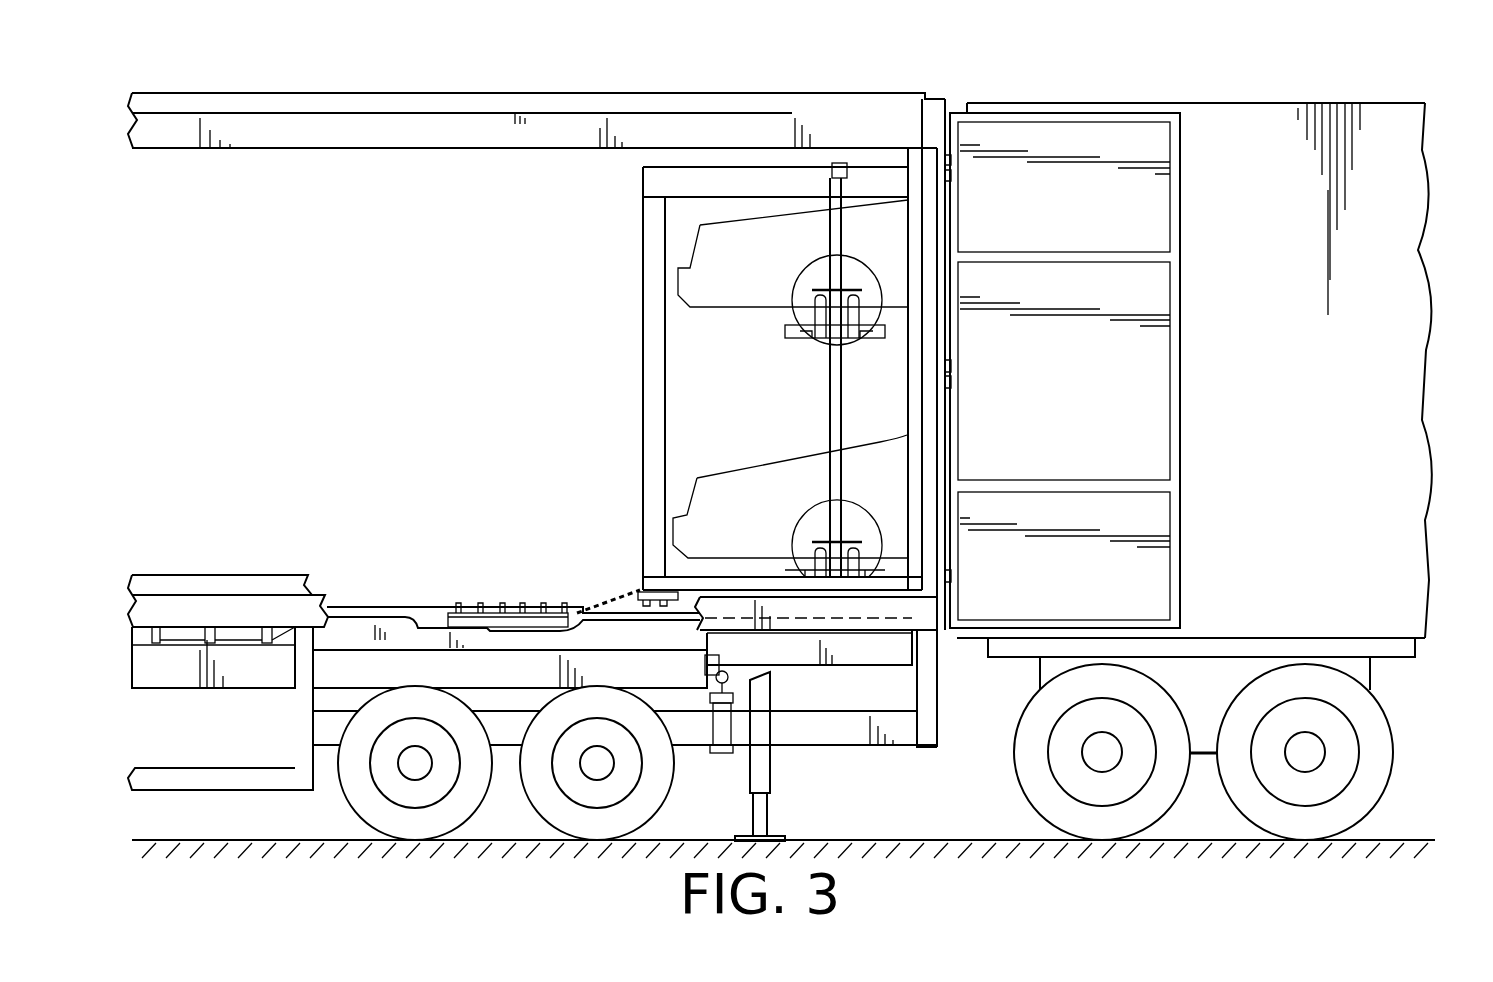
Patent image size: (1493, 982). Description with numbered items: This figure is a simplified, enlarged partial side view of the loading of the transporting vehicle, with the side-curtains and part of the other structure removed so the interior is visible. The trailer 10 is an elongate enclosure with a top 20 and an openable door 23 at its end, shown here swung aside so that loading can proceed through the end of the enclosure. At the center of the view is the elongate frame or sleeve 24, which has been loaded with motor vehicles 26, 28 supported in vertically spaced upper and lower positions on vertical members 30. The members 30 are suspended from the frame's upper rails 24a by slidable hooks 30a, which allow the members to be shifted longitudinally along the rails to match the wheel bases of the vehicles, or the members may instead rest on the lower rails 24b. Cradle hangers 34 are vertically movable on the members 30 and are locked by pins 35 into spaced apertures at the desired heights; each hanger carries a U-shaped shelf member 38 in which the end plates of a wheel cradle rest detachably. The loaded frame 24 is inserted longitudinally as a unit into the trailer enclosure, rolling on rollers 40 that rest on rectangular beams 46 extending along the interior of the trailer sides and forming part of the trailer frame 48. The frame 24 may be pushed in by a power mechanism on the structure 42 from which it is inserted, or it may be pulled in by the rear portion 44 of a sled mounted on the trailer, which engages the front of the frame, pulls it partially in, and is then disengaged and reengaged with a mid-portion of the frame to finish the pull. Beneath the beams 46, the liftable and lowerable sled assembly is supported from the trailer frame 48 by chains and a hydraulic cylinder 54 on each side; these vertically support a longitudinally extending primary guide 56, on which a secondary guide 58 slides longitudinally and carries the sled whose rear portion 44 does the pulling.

The trailer 10 is at (526, 84).
The top 20 is at (282, 93).
The openable door 23 is at (1178, 443).
The elongate frame or sleeve 24 is at (640, 413).
The upper rails 24a is at (717, 167).
The lower rails 24b is at (723, 580).
The motor vehicle 26 is at (745, 302).
The motor vehicle 28 is at (725, 487).
The vertical member 30 is at (826, 428).
The slidable hook 30a is at (838, 163).
The cradle hanger 34 is at (852, 317).
The pin 35 is at (837, 305).
The U-shaped shelf member 38 is at (790, 334).
The roller 40 is at (657, 602).
The structure 42 is at (1400, 233).
The rear portion of sled 44 is at (492, 603).
The rectangular beam 46 is at (343, 605).
The trailer frame 48 is at (875, 120).
The hydraulic cylinder 54 is at (718, 722).
The primary guide 56 is at (265, 685).
The secondary guide 58 is at (870, 655).